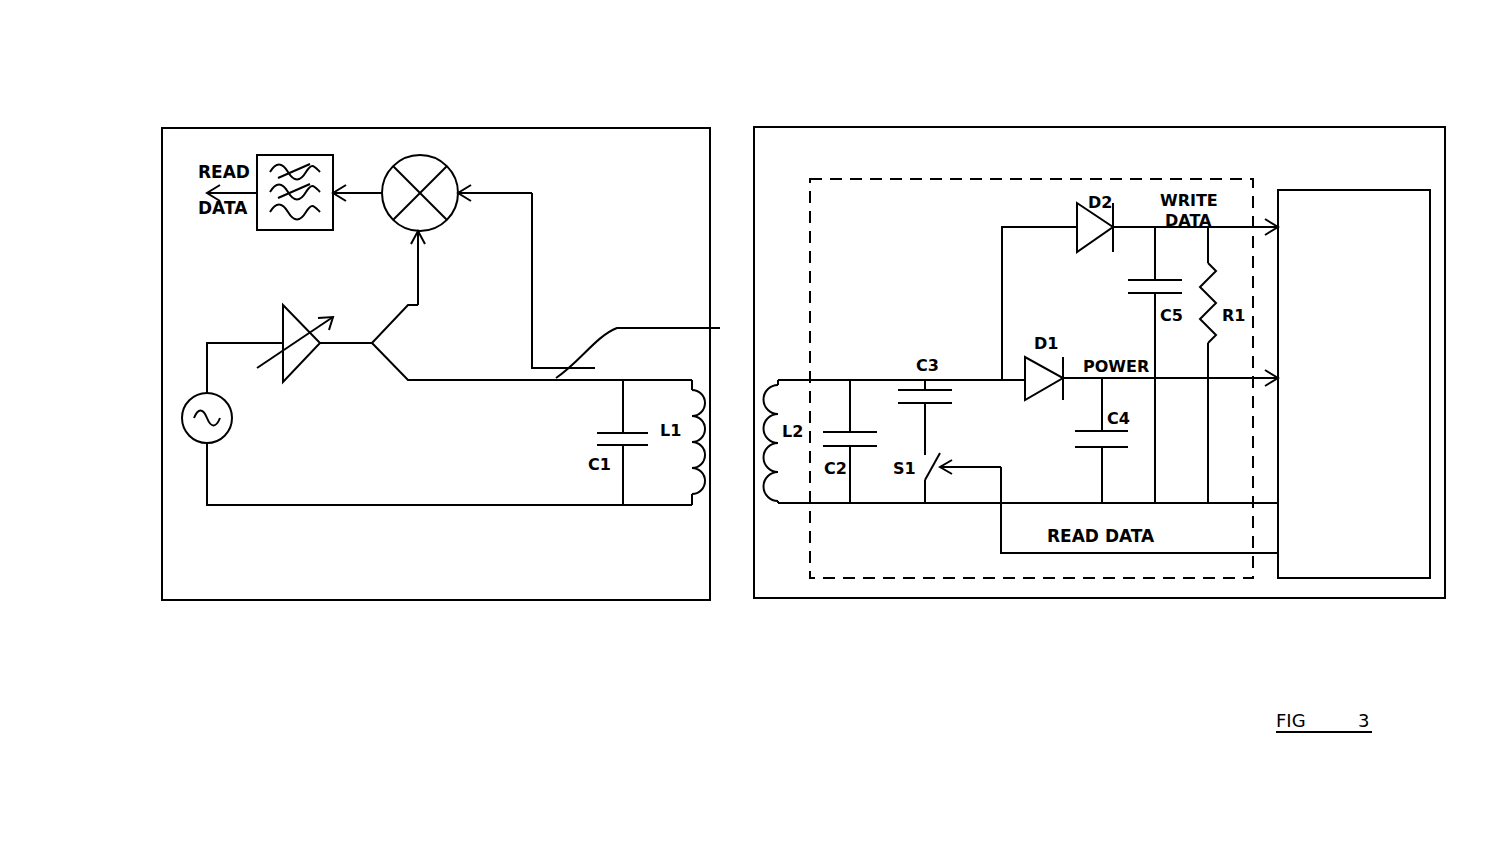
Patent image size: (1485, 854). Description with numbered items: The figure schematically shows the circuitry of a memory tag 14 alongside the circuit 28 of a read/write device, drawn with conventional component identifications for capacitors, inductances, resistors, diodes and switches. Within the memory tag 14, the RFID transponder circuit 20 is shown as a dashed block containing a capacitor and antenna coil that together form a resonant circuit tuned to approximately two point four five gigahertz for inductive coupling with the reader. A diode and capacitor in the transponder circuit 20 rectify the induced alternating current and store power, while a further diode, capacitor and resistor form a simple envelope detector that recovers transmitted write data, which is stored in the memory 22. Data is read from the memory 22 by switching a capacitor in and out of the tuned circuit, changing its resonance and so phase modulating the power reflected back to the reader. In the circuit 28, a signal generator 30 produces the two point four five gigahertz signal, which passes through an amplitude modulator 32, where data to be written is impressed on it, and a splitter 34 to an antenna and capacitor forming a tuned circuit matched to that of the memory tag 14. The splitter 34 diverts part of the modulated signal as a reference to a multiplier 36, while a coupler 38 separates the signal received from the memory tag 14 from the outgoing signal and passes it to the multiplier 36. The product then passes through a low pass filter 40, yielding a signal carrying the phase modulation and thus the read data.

The memory tag 14 is at (1336, 110).
The RFID transponder circuit 20 is at (1123, 578).
The memory 22 is at (1385, 372).
The circuit of the reader device 28 is at (601, 126).
The signal generator 30 is at (200, 458).
The amplitude modulator 32 is at (283, 317).
The splitter 34 is at (393, 320).
The multiplier 36 is at (413, 168).
The coupler 38 is at (718, 329).
The low pass filter 40 is at (298, 168).